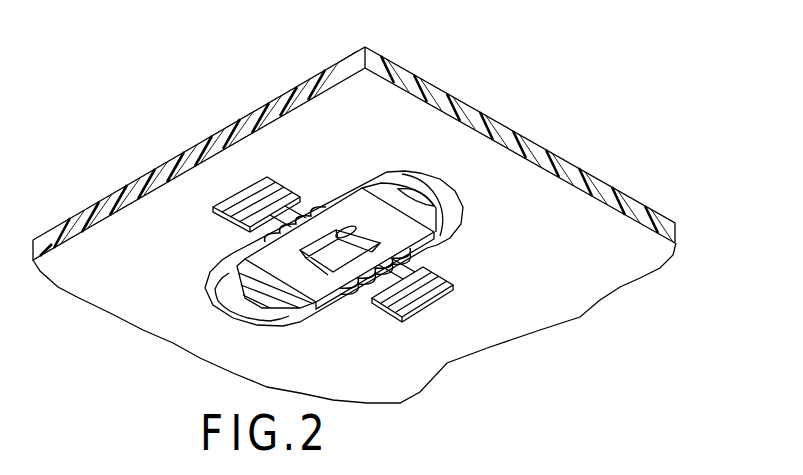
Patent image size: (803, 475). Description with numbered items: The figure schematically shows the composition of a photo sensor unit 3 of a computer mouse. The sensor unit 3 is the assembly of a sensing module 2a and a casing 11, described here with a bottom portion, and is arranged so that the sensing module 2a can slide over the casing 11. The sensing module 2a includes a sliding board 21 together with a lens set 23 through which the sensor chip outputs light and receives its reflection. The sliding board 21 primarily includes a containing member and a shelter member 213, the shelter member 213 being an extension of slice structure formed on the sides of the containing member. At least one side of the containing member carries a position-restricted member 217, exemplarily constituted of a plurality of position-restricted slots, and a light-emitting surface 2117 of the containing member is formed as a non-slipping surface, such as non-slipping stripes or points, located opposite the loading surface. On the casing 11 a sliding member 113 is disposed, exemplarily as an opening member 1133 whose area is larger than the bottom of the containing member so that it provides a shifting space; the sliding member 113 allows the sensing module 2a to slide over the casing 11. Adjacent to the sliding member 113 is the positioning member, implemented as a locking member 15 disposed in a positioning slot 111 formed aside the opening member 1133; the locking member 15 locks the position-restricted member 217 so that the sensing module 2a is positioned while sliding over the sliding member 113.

The photo sensor unit 3 is at (52, 35).
The sensing module 2a is at (319, 182).
The casing 11 is at (600, 229).
The positioning slot 111 is at (433, 307).
The sliding member 113 is at (405, 172).
The opening member 1133 is at (230, 302).
The sliding board 21 is at (452, 187).
The shelter member 213 is at (457, 197).
The light-emitting surface 2117 is at (258, 250).
The position-restricted member 217 is at (350, 283).
The lens set 23 is at (403, 251).
The locking member 15 is at (398, 293).